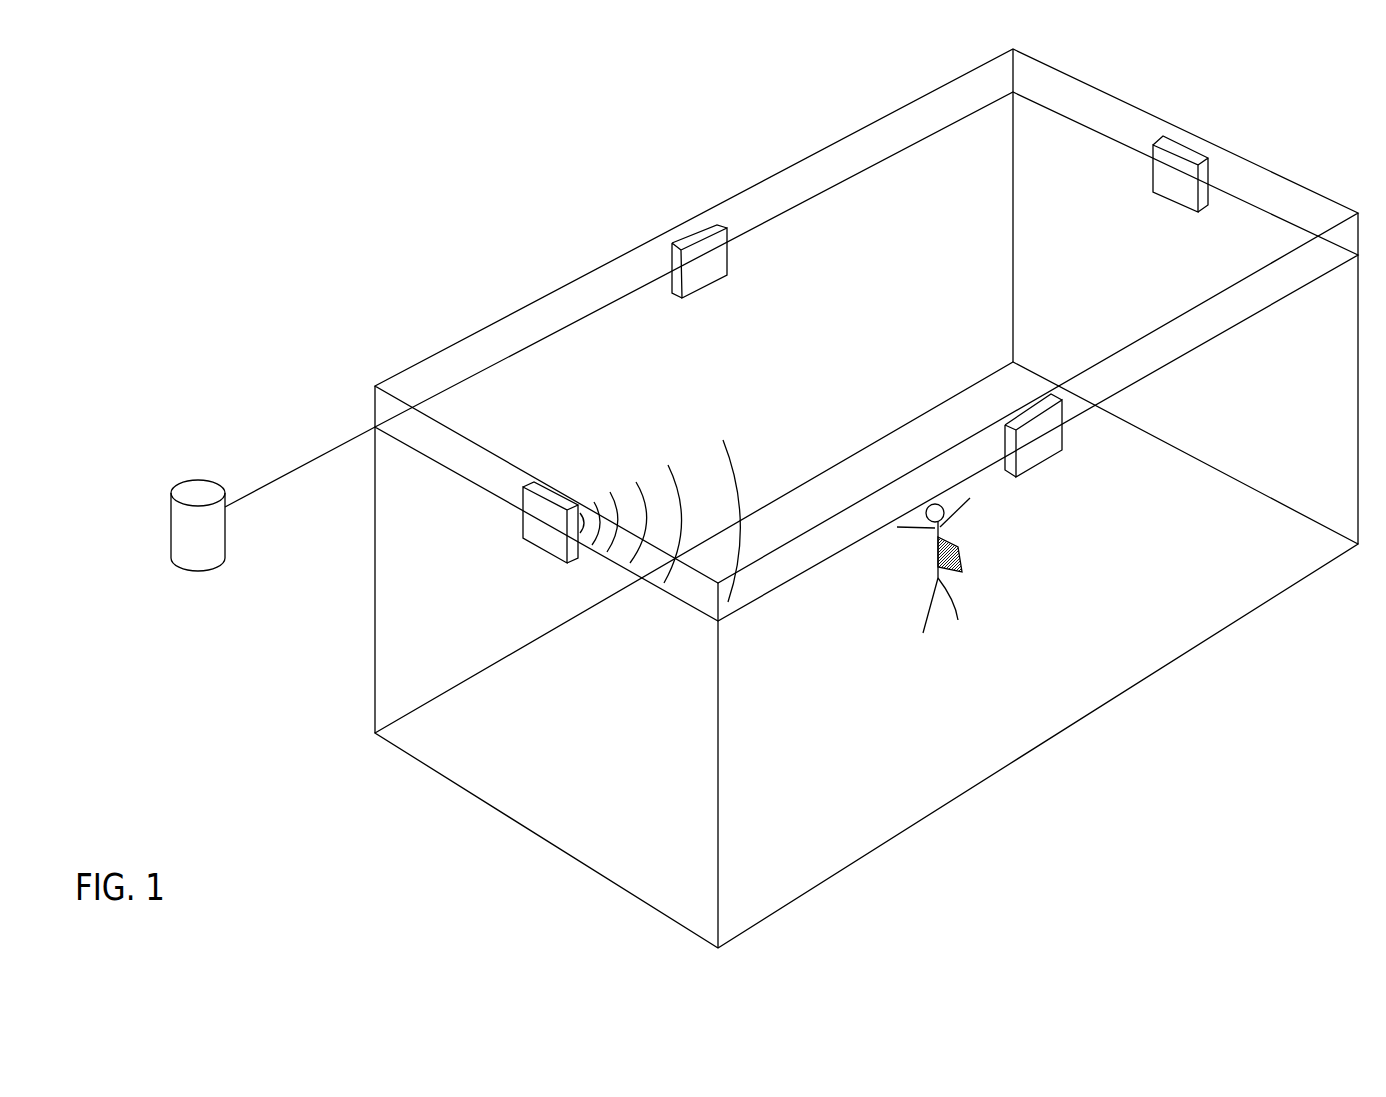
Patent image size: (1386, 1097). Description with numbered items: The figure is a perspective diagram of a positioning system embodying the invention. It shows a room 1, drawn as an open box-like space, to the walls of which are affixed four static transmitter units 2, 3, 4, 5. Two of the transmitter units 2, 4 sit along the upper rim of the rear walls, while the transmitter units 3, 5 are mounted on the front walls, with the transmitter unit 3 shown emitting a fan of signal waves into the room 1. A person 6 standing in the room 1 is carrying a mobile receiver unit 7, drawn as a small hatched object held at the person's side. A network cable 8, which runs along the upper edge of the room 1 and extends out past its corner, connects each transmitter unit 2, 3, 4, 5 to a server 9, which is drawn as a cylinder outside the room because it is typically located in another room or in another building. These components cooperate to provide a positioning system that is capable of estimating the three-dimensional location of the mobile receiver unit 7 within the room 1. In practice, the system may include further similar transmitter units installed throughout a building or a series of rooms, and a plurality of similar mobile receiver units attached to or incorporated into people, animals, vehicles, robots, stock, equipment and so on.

The room 1 is at (500, 778).
The static transmitter unit 2 is at (703, 250).
The static transmitter unit 3 is at (545, 524).
The static transmitter unit 4 is at (1177, 173).
The static transmitter unit 5 is at (1038, 442).
The person 6 is at (917, 529).
The mobile receiver unit 7 is at (962, 553).
The network cable 8 is at (557, 330).
The server 9 is at (197, 493).